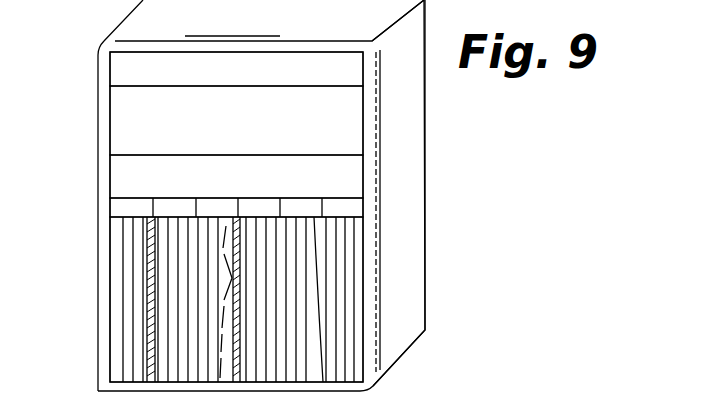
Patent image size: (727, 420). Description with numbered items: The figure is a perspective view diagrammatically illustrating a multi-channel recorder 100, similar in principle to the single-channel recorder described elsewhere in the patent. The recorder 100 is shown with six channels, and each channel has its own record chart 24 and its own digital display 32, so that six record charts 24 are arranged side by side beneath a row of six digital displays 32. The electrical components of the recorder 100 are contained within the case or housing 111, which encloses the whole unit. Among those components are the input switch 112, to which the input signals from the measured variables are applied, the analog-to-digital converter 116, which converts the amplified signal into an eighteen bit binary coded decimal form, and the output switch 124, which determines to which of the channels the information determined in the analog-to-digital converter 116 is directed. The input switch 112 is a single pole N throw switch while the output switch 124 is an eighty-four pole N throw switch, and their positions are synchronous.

The recorder 100 is at (60, 138).
The case or housing 111 is at (410, 146).
The input switch 112 is at (262, 78).
The analog-to-digital converter 116 is at (262, 132).
The output switch 124 is at (262, 184).
The digital display 32 is at (170, 200).
The record chart 24 is at (172, 303).